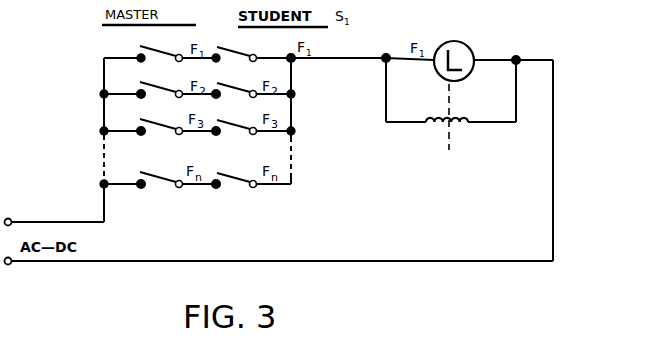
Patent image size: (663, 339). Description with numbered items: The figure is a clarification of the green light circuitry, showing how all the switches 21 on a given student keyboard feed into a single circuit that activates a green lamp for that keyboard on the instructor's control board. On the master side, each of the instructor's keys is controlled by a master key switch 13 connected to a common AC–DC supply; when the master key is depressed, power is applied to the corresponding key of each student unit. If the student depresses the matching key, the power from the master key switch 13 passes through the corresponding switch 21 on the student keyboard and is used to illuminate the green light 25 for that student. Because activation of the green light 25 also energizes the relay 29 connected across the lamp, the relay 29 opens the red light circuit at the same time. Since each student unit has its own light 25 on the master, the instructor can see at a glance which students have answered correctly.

The master key switch 13 is at (155, 51).
The switch 21 is at (222, 51).
The green light 25 is at (470, 47).
The relay 29 is at (462, 126).